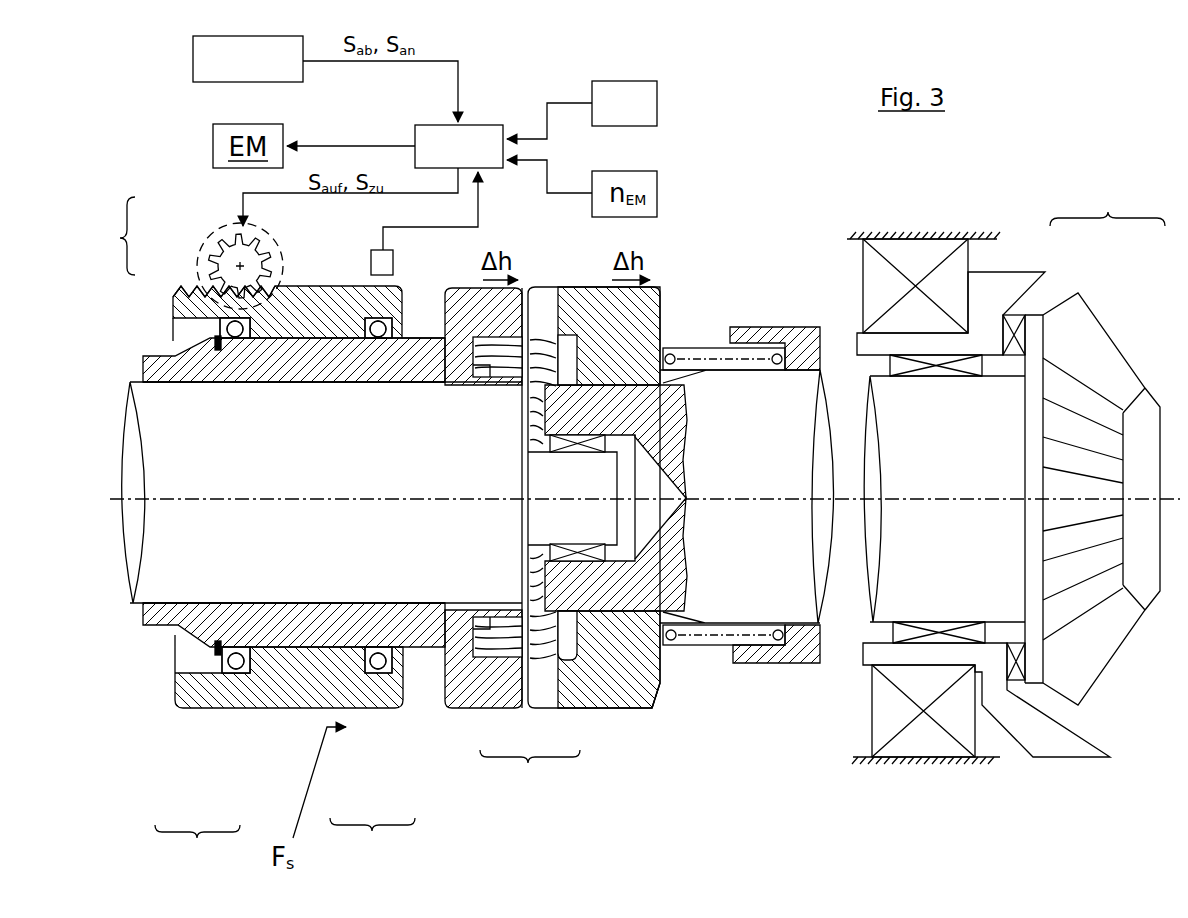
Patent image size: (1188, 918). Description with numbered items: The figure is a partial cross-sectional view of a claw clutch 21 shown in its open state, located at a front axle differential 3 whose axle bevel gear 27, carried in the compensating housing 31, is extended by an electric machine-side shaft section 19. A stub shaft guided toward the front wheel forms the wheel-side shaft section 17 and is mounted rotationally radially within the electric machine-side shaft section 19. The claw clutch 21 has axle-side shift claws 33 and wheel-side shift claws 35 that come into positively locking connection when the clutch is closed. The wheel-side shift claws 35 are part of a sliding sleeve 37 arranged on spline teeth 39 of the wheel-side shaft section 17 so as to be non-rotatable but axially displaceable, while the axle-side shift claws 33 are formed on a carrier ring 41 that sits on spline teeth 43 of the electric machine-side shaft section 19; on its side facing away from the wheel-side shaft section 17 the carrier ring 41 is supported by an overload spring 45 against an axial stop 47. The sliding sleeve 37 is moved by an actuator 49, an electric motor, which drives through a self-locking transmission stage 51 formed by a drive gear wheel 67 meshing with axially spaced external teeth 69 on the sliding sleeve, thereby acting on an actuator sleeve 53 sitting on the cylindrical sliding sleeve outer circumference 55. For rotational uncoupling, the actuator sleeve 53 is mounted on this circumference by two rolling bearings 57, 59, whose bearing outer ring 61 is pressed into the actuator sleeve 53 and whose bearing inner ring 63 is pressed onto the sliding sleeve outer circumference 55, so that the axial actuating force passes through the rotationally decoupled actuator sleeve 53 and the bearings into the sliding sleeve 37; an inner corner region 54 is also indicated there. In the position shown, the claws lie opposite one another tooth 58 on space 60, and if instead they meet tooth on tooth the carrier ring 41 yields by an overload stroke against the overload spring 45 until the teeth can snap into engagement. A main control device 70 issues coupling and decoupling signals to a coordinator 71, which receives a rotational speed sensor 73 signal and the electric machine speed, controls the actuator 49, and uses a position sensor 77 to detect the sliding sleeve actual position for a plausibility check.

The front axle differential 3 is at (1006, 474).
The wheel-side shaft section 17 is at (464, 472).
The electric machine-side shaft section 19 is at (758, 453).
The claw clutch 21 is at (528, 565).
The axle bevel gear 27 is at (1092, 306).
The compensating housing 31 is at (1047, 271).
The axle-side shift claws 33 is at (575, 708).
The wheel-side shift claws 35 is at (493, 708).
The sliding sleeve 37 is at (310, 622).
The spline teeth 39 is at (353, 603).
The carrier ring 41 is at (667, 682).
The spline teeth 43 is at (684, 567).
The overload spring 45 is at (716, 646).
The axial stop 47 is at (803, 665).
The actuator 49 is at (284, 257).
The transmission stage 51 is at (180, 247).
The actuator sleeve 53 is at (291, 708).
The inner corner region 54 is at (441, 314).
The cylindrical sliding sleeve outer circumference 55 is at (427, 658).
The rolling bearing 57 is at (372, 588).
The tooth 58 is at (478, 306).
The rolling bearing 59 is at (202, 591).
The space 60 is at (548, 303).
The bearing outer ring 61 is at (244, 668).
The bearing inner ring 63 is at (223, 664).
The drive gear wheel 67 is at (233, 250).
The external teeth 69 is at (183, 295).
The main control device 70 is at (231, 75).
The coordinator 71 is at (444, 162).
The rotational speed sensor 73 is at (657, 98).
The position sensor 77 is at (393, 259).